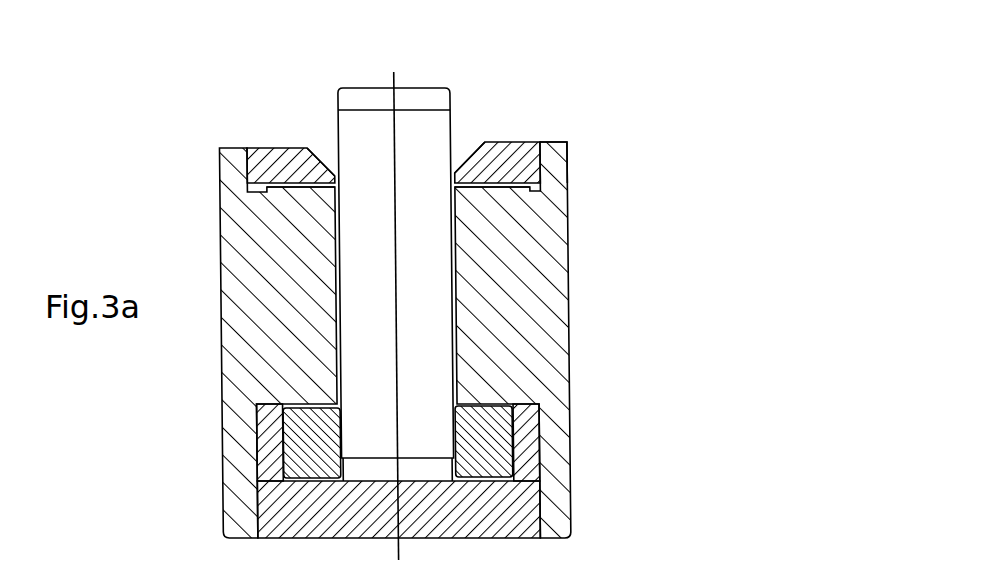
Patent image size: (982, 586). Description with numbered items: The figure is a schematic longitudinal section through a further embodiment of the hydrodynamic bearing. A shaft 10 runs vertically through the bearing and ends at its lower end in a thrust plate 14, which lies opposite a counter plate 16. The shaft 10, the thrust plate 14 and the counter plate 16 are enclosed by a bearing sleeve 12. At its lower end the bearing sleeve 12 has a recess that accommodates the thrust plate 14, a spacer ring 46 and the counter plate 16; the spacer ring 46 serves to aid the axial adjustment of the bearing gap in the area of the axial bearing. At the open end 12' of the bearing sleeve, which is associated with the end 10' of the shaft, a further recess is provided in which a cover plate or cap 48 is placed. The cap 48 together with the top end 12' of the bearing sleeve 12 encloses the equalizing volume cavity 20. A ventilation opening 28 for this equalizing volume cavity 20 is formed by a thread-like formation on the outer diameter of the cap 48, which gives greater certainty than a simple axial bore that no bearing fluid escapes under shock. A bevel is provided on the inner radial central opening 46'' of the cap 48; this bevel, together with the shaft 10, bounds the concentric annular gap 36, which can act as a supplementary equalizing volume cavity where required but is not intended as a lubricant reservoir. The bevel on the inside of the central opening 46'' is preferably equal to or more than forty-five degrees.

The shaft 10 is at (507, 316).
The end of the shaft 10' is at (415, 68).
The bearing sleeve 12 is at (447, 340).
The open end of the bearing sleeve 12' is at (279, 104).
The thrust plate 14 is at (540, 463).
The counter plate 16 is at (490, 517).
The equalizing volume cavity 20 is at (568, 184).
The ventilation opening 28 is at (572, 154).
The concentric annular gap 36 is at (328, 157).
The spacer ring 46 is at (481, 433).
The inner radial central opening 46'' is at (495, 96).
The cap 48 is at (537, 143).